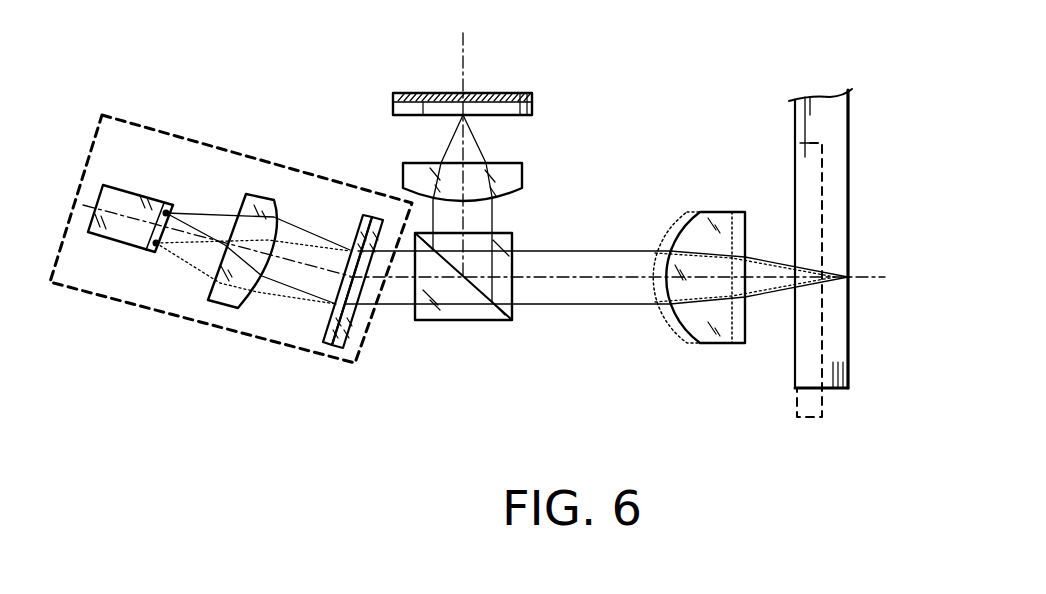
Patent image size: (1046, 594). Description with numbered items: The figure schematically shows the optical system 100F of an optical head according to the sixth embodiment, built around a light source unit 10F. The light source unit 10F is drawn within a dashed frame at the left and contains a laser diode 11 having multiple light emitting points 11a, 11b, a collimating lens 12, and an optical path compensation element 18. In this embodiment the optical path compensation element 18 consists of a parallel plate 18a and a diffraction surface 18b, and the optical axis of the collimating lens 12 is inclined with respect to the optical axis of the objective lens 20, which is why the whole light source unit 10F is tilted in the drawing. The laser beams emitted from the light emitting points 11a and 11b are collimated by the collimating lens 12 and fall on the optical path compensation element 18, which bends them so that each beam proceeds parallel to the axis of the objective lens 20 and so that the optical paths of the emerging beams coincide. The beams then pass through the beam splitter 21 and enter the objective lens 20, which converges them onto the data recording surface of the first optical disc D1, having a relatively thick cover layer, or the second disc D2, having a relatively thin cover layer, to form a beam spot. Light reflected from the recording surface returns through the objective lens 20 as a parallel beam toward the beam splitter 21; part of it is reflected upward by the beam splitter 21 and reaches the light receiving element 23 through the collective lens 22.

The optical system 100F is at (670, 56).
The light source unit 10F is at (299, 130).
The laser diode 11 is at (125, 195).
The light emitting point 11a is at (165, 209).
The light emitting point 11b is at (155, 247).
The collimating lens 12 is at (224, 296).
The optical path compensation element 18 is at (348, 333).
The parallel plate 18a is at (349, 330).
The diffraction surface 18b is at (327, 345).
The objective lens 20 is at (702, 332).
The beam splitter 21 is at (480, 314).
The collective lens 22 is at (522, 176).
The light receiving element 23 is at (533, 108).
The first optical disc D1 is at (849, 221).
The second disc D2 is at (790, 405).